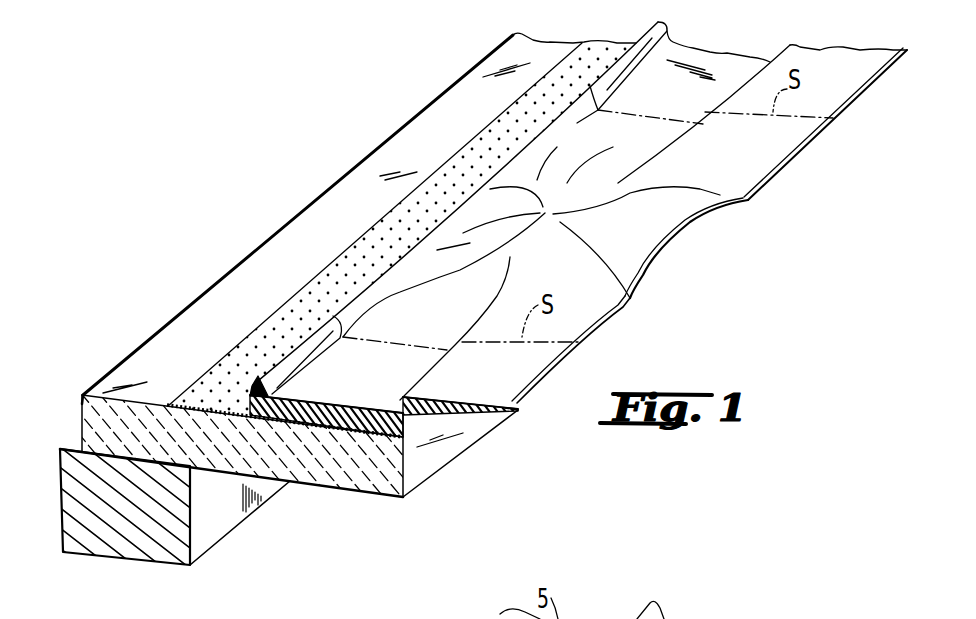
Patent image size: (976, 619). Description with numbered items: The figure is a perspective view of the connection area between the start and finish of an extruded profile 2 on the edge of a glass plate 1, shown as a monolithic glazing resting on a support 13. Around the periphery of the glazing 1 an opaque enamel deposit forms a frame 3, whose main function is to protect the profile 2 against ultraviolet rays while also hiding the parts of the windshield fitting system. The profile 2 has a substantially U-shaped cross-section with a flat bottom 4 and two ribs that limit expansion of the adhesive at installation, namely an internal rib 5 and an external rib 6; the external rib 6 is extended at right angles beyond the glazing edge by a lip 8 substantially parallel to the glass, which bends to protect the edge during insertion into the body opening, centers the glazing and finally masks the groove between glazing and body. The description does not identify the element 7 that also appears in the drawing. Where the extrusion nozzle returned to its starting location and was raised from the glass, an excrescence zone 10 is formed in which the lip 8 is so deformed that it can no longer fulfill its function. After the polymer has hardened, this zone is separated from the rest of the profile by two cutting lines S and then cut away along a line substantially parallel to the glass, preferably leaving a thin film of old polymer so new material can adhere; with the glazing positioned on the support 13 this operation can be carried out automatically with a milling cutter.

The glass plate 1 is at (268, 265).
The profile 2 is at (278, 343).
The frame 3 is at (337, 272).
The flat bottom 4 is at (337, 420).
The internal rib 5 is at (257, 382).
The external rib 6 is at (388, 411).
The support plate 7 is at (420, 458).
The lip 8 is at (494, 413).
The excrescence zone 10 is at (658, 238).
The support 13 is at (143, 550).